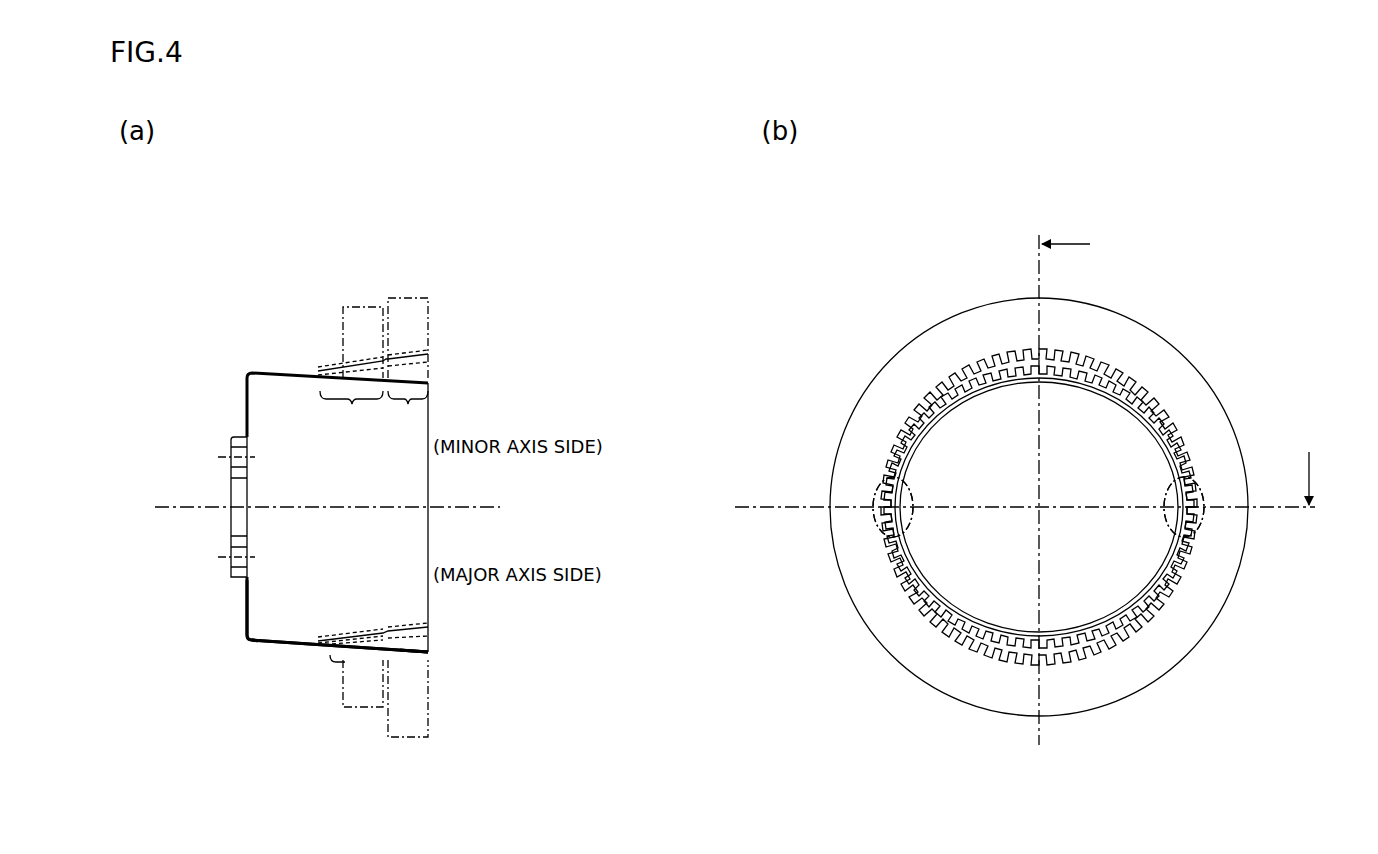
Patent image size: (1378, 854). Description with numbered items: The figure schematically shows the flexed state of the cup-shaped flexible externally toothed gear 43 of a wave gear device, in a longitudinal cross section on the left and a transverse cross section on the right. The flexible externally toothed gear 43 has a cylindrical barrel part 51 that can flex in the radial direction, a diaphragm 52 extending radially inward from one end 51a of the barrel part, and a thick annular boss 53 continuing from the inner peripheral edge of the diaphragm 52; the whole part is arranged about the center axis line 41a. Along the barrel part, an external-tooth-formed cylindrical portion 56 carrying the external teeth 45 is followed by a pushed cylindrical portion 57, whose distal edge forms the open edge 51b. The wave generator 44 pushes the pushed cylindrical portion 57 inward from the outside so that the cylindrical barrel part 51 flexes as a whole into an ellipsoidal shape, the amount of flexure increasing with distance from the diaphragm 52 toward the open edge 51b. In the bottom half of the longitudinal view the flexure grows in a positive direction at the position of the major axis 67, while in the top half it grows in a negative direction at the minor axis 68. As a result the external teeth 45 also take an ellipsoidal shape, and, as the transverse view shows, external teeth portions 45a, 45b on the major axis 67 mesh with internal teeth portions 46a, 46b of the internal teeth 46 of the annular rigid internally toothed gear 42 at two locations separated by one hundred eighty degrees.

The center axis line 41a is at (170, 507).
The rigid internally toothed gear 42 is at (345, 300).
The flexible externally toothed gear 43 is at (216, 343).
The wave generator 44 is at (421, 295).
The external teeth 45 is at (350, 372).
The internal teeth 46 is at (356, 640).
The cylindrical barrel part 51 is at (283, 645).
The end of cylindrical barrel part 51a is at (247, 643).
The open edge 51b is at (428, 652).
The diaphragm 52 is at (244, 600).
The boss 53 is at (231, 568).
The external-tooth-formed cylindrical portion 56 is at (351, 410).
The pushed cylindrical portion 57 is at (408, 410).
The major axis 67 is at (1283, 505).
The minor axis 68 is at (1042, 280).
The external teeth portion 45a is at (1208, 520).
The internal teeth portion 46a is at (1184, 507).
The external teeth portion 45b is at (866, 515).
The internal teeth portion 46b is at (893, 507).